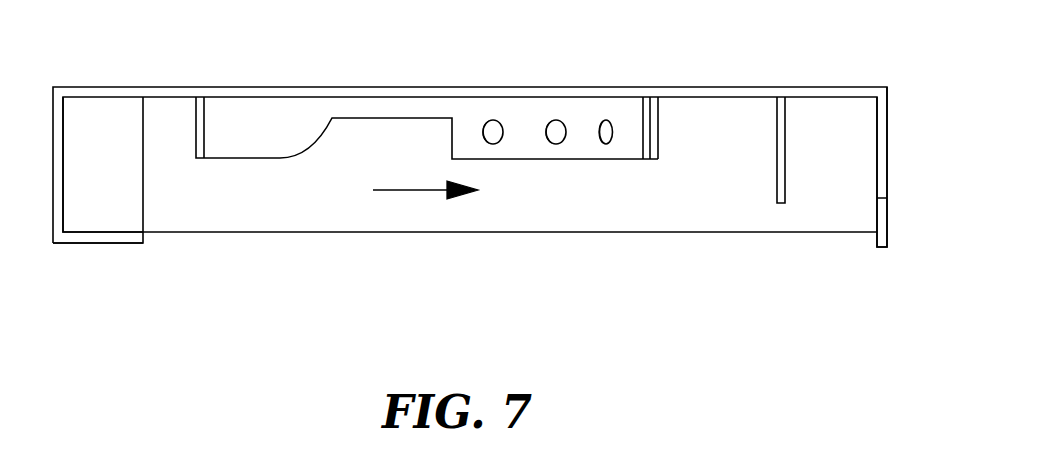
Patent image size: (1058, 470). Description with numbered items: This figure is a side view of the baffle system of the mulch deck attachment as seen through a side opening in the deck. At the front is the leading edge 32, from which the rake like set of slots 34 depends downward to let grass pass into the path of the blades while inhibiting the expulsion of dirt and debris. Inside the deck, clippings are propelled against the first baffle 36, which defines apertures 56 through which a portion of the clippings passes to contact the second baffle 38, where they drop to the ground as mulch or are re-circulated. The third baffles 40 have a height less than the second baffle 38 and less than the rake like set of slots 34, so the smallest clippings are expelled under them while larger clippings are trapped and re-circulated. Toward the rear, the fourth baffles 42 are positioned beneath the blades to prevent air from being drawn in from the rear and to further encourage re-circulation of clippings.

The leading edge 32 is at (887, 87).
The rake like set of slots 34 is at (877, 187).
The first baffle 36 is at (427, 160).
The second baffle 38 is at (775, 188).
The third baffles 40 is at (658, 148).
The fourth baffles 42 is at (104, 212).
The apertures 56 is at (548, 127).